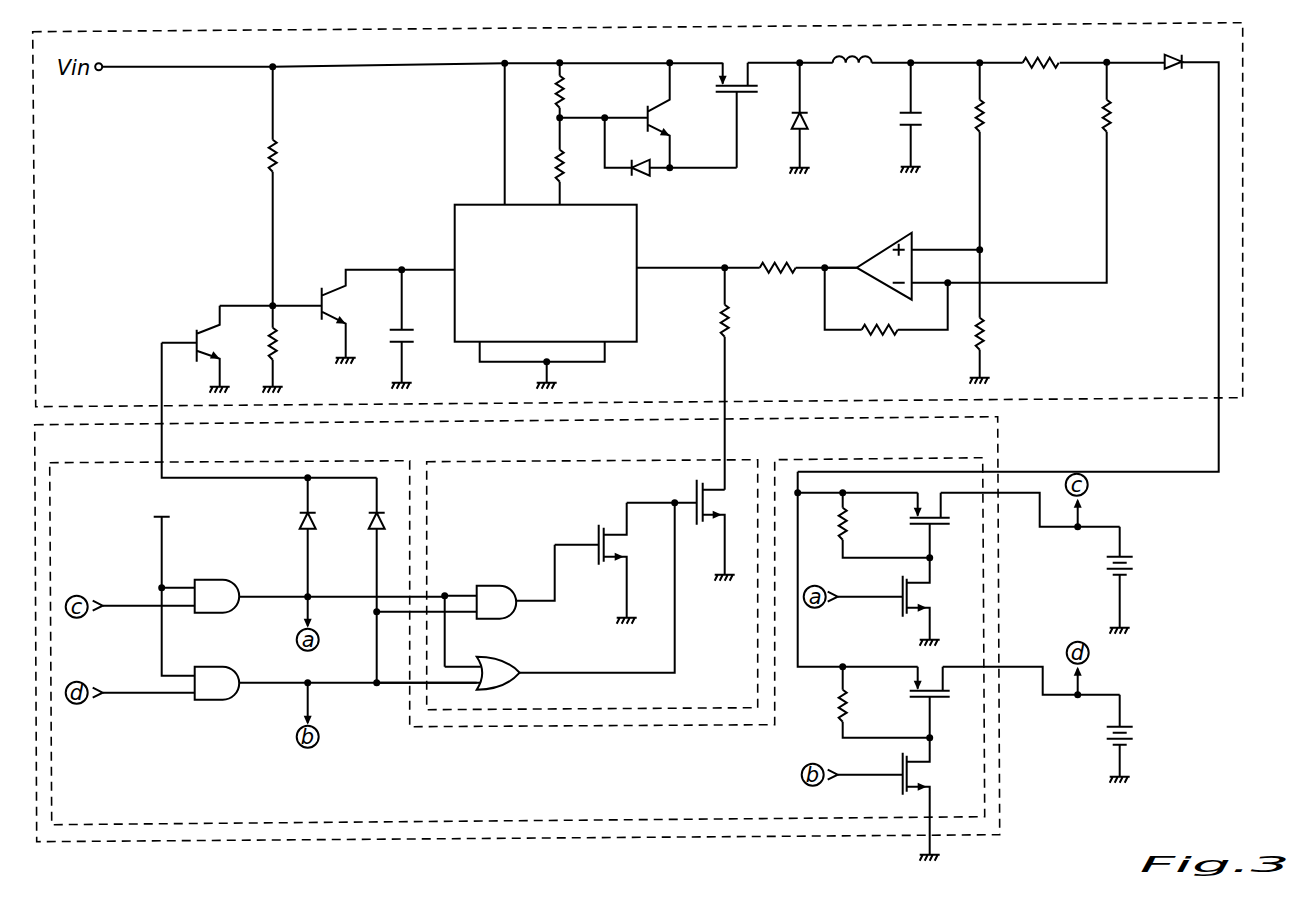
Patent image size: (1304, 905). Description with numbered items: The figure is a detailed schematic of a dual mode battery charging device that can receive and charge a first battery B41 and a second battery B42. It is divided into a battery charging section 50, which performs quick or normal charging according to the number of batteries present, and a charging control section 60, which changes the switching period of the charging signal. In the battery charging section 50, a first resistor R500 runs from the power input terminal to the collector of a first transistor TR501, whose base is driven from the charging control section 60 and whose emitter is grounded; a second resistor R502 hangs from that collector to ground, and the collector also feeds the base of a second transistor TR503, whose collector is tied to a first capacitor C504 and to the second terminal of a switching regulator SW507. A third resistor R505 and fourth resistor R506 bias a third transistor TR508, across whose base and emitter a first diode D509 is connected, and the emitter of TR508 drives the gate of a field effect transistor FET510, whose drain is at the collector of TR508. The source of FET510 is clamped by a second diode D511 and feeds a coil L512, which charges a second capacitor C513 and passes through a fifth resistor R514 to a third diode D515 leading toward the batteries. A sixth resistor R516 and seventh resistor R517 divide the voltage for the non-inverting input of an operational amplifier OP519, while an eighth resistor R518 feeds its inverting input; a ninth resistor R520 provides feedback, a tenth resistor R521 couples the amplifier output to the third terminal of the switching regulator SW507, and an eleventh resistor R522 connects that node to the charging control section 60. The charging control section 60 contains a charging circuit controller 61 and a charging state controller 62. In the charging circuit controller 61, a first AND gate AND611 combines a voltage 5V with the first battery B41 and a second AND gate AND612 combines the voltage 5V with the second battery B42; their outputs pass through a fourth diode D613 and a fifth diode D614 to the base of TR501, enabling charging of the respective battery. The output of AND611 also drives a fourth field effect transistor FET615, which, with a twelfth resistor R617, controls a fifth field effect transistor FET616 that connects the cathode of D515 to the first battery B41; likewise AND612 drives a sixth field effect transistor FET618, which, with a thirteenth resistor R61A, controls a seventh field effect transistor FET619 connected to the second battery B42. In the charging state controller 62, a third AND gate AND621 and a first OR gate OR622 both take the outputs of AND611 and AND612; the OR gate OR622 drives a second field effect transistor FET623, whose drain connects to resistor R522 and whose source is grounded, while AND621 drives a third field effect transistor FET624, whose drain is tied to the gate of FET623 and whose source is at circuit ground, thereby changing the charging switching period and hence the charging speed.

The battery charging section 50 is at (1245, 62).
The charging control section 60 is at (1000, 448).
The charging circuit controller 61 is at (262, 462).
The charging state controller 62 is at (612, 460).
The first resistor R500 is at (305, 184).
The first transistor TR501 is at (187, 349).
The second resistor R502 is at (302, 349).
The second transistor TR503 is at (337, 315).
The first capacitor C504 is at (429, 327).
The third resistor R505 is at (592, 90).
The fourth resistor R506 is at (590, 161).
The switching regulator SW507 is at (607, 224).
The third transistor TR508 is at (648, 115).
The first diode D509 is at (671, 165).
The field effect transistor FET510 is at (742, 100).
The second diode D511 is at (830, 116).
The coil L512 is at (861, 78).
The second capacitor C513 is at (936, 116).
The fifth resistor R514 is at (1042, 48).
The third diode D515 is at (1178, 80).
The sixth resistor R516 is at (1013, 188).
The seventh resistor R517 is at (1010, 351).
The eighth resistor R518 is at (1043, 171).
The operational amplifier OP519 is at (900, 257).
The ninth resistor R520 is at (886, 315).
The tenth resistor R521 is at (803, 253).
The eleventh resistor R522 is at (697, 377).
The voltage 5V is at (164, 537).
The first AND gate AND611 is at (274, 582).
The second AND gate AND612 is at (290, 644).
The fourth diode D613 is at (280, 537).
The fifth diode D614 is at (351, 580).
The fourth field effect transistor FET615 is at (889, 602).
The fifth field effect transistor FET616 is at (1015, 527).
The twelfth resistor R617 is at (884, 525).
The sixth field effect transistor FET618 is at (881, 799).
The seventh field effect transistor FET619 is at (1015, 702).
The thirteenth resistor R61A is at (886, 704).
The third AND gate AND621 is at (464, 606).
The first OR gate OR622 is at (526, 602).
The second field effect transistor FET623 is at (677, 523).
The third field effect transistor FET624 is at (580, 560).
The first battery B41 is at (1146, 580).
The second battery B42 is at (1145, 739).